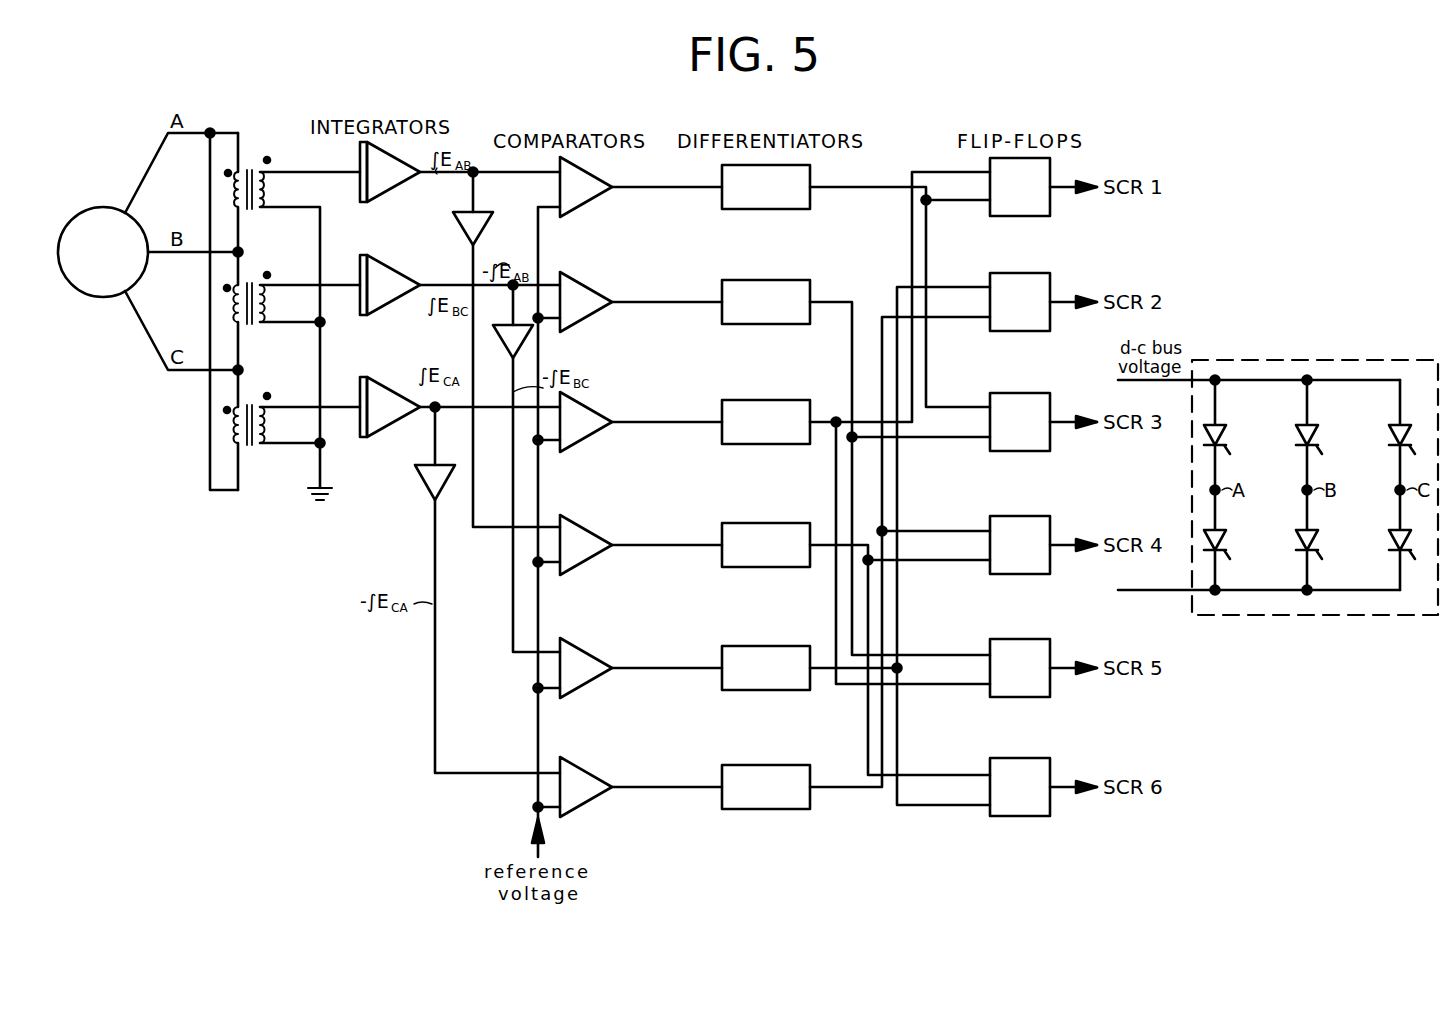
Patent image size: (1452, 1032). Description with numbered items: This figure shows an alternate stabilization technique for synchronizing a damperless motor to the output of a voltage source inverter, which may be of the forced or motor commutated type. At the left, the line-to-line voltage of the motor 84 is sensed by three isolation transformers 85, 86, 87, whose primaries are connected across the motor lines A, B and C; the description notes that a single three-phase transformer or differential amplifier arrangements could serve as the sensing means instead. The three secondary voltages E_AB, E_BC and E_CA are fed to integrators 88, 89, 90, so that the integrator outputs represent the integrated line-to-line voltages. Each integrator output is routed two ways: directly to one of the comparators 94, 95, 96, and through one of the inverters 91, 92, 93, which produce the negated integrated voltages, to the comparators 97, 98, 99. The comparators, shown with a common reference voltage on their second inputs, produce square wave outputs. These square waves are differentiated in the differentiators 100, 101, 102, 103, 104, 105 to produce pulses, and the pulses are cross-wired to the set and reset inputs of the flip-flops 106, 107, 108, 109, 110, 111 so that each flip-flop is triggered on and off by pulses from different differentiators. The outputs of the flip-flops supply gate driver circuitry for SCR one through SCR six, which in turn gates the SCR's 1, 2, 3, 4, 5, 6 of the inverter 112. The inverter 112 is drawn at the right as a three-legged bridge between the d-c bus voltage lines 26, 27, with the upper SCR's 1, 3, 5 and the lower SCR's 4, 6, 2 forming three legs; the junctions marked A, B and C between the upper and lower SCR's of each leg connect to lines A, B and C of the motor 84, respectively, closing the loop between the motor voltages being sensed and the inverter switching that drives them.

The motor 84 is at (92, 297).
The isolation transformer 85 is at (255, 172).
The isolation transformer 86 is at (255, 287).
The isolation transformer 87 is at (255, 407).
The integrator 88 is at (392, 203).
The integrator 89 is at (392, 316).
The integrator 90 is at (390, 438).
The inverter 91 is at (466, 236).
The inverter 92 is at (506, 349).
The inverter 93 is at (428, 489).
The comparator 94 is at (585, 217).
The comparator 95 is at (585, 332).
The comparator 96 is at (585, 452).
The comparator 97 is at (585, 575).
The comparator 98 is at (585, 698).
The comparator 99 is at (585, 817).
The differentiator 100 is at (757, 209).
The differentiator 101 is at (757, 324).
The differentiator 102 is at (757, 444).
The differentiator 103 is at (757, 567).
The differentiator 104 is at (757, 690).
The differentiator 105 is at (757, 809).
The flip-flop 106 is at (988, 179).
The flip-flop 107 is at (988, 294).
The flip-flop 108 is at (988, 414).
The flip-flop 109 is at (988, 537).
The flip-flop 110 is at (988, 660).
The flip-flop 111 is at (988, 779).
The inverter 112 is at (1434, 362).
The d-c bus voltage line (positive) 26 is at (1159, 384).
The d-c bus voltage line (negative) 27 is at (1159, 595).
The SCR 1 is at (1222, 424).
The SCR 2 is at (1407, 529).
The SCR 3 is at (1314, 424).
The SCR 4 is at (1222, 529).
The SCR 5 is at (1407, 424).
The SCR 6 is at (1314, 529).